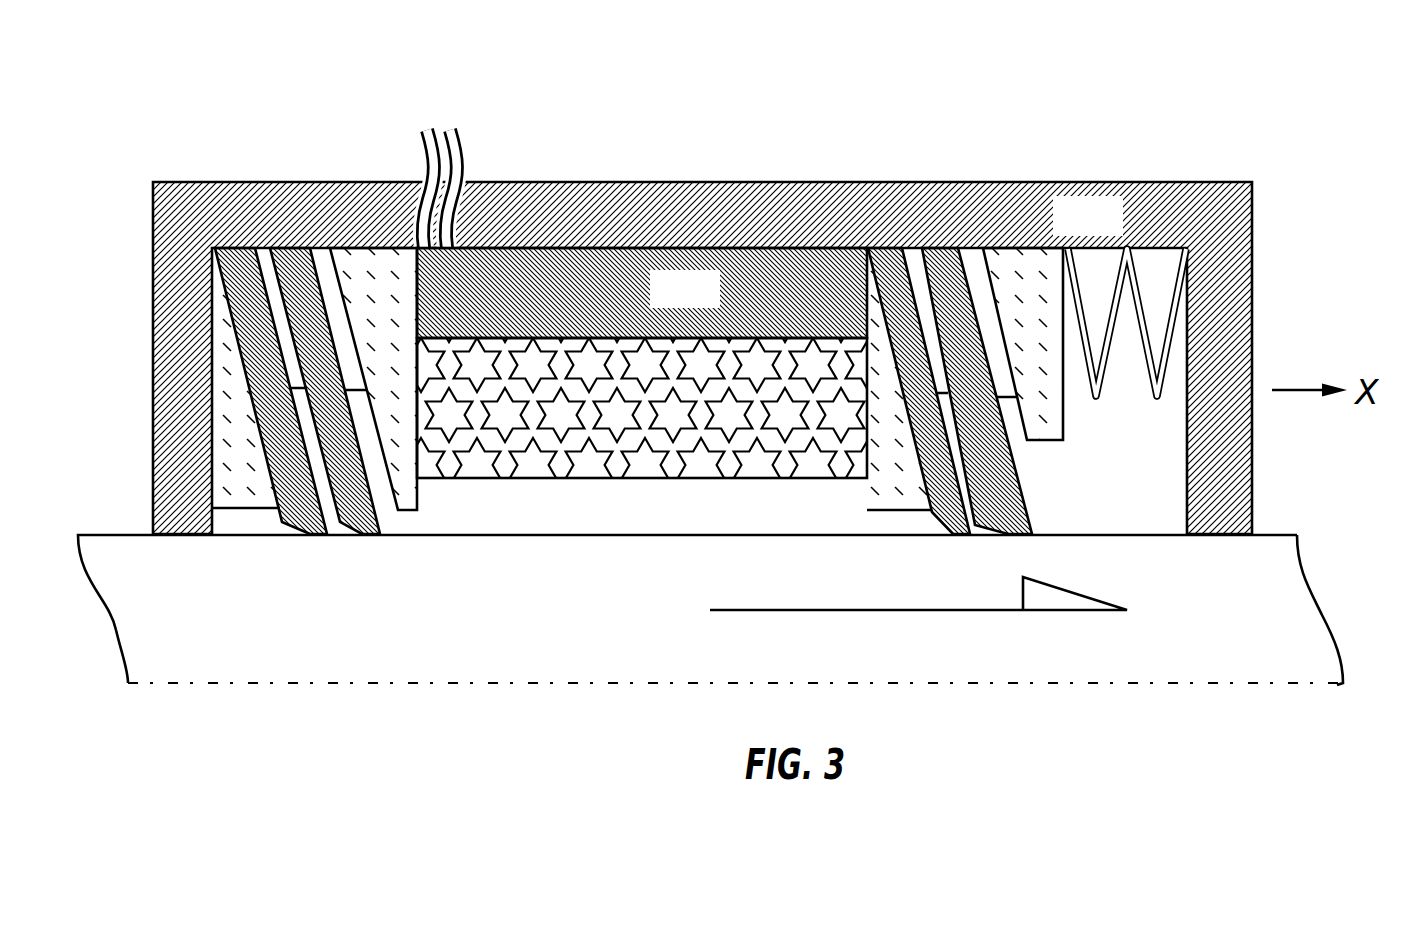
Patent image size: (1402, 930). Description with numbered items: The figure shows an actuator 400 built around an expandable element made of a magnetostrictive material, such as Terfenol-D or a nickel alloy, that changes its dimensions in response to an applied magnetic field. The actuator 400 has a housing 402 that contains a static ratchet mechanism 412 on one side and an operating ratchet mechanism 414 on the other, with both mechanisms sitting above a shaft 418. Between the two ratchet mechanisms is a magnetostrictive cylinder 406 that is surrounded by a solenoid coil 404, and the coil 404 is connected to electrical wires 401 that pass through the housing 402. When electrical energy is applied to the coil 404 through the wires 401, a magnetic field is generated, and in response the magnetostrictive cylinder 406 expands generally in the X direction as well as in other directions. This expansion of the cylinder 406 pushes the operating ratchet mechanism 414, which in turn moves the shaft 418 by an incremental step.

The actuator 400 is at (702, 322).
The electrical wires 401 is at (460, 140).
The housing 402 is at (1060, 232).
The solenoid coil 404 is at (656, 307).
The magnetostrictive cylinder 406 is at (512, 487).
The static ratchet mechanism 412 is at (188, 176).
The operating ratchet mechanism 414 is at (847, 178).
The shaft 418 is at (1300, 623).